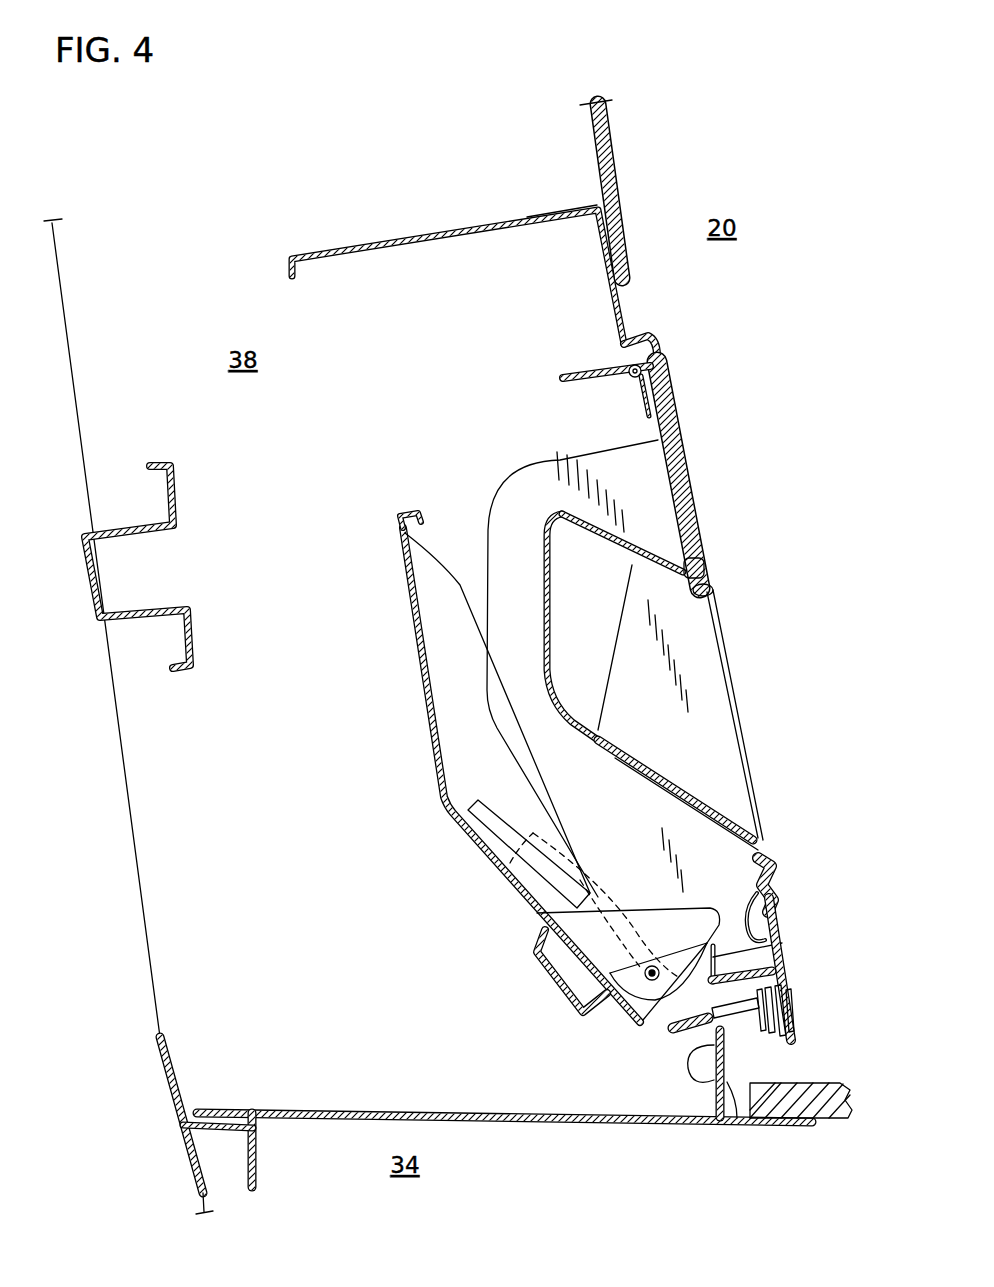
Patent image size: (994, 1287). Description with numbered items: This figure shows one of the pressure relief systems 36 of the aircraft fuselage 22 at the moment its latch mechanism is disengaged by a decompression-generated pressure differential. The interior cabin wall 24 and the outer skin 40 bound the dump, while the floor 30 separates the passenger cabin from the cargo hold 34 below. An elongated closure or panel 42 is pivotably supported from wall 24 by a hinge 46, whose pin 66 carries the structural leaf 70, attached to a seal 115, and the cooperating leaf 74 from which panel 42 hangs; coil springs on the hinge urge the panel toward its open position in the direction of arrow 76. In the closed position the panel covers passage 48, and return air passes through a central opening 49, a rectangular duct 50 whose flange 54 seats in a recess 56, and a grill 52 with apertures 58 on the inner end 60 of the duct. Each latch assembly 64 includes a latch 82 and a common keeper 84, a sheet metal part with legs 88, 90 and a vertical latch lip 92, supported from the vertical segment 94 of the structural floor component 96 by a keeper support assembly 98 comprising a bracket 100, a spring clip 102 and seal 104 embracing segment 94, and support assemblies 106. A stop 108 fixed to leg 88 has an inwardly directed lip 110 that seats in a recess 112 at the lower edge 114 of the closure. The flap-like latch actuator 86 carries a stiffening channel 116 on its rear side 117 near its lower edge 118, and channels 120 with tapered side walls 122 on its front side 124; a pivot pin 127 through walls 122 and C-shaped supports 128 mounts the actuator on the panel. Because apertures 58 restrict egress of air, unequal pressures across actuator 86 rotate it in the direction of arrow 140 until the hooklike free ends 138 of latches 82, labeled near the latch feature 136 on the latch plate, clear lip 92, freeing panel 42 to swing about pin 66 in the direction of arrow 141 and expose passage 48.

The aircraft body or fuselage 22 is at (100, 697).
The interior wall 24 is at (617, 180).
The floor 30 is at (833, 1122).
The cargo hold or baggage compartment 34 is at (497, 1150).
The pressure relief or equalization system 36 is at (478, 425).
The outer skin 40 is at (70, 418).
The closure or panel 42 is at (678, 400).
The hinge 46 is at (605, 396).
The passage 48 is at (620, 345).
The central opening 49 is at (712, 592).
The duct 50 is at (740, 700).
The grill 52 is at (543, 615).
The flange 54 is at (707, 570).
The recess 56 is at (765, 845).
The apertures 58 is at (542, 545).
The inner end of the duct 60 is at (623, 607).
The latch assembly 64 is at (525, 937).
The hinge pin 66 is at (657, 371).
The structural member-associated hinge leaf 70 is at (566, 377).
The cooperating hinge leaf 74 is at (648, 418).
The arrow 76 is at (367, 621).
The latch 82 is at (576, 912).
The keeper 84 is at (792, 962).
The actuator 86 is at (427, 702).
The support-associated leg 88 is at (798, 1025).
The leg 90 is at (792, 975).
The latch lip 92 is at (715, 957).
The vertical segment 94 is at (690, 1062).
The structural floor component 96 is at (723, 1127).
The keeper support assembly 98 is at (740, 1025).
The bracket 100 is at (673, 1027).
The spring clip 102 is at (693, 1085).
The seal 104 is at (737, 1118).
The support assembly 106 is at (790, 1048).
The stop 108 is at (800, 1003).
The inwardly directed lip 110 is at (770, 892).
The recess 112 is at (780, 923).
The lower edge 114 is at (750, 930).
The seal 115 is at (646, 338).
The channel 116 is at (553, 983).
The rear side 117 is at (432, 755).
The lower edge 118 is at (646, 1026).
The channel 120 is at (507, 817).
The tapered side walls 122 is at (480, 810).
The front side 124 is at (447, 770).
The pivot pin 127 is at (648, 966).
The C-shaped support 128 is at (492, 490).
The ledge 136 is at (707, 943).
The free end 138 is at (697, 910).
The arrow 140 is at (473, 880).
The arrow 141 is at (435, 477).